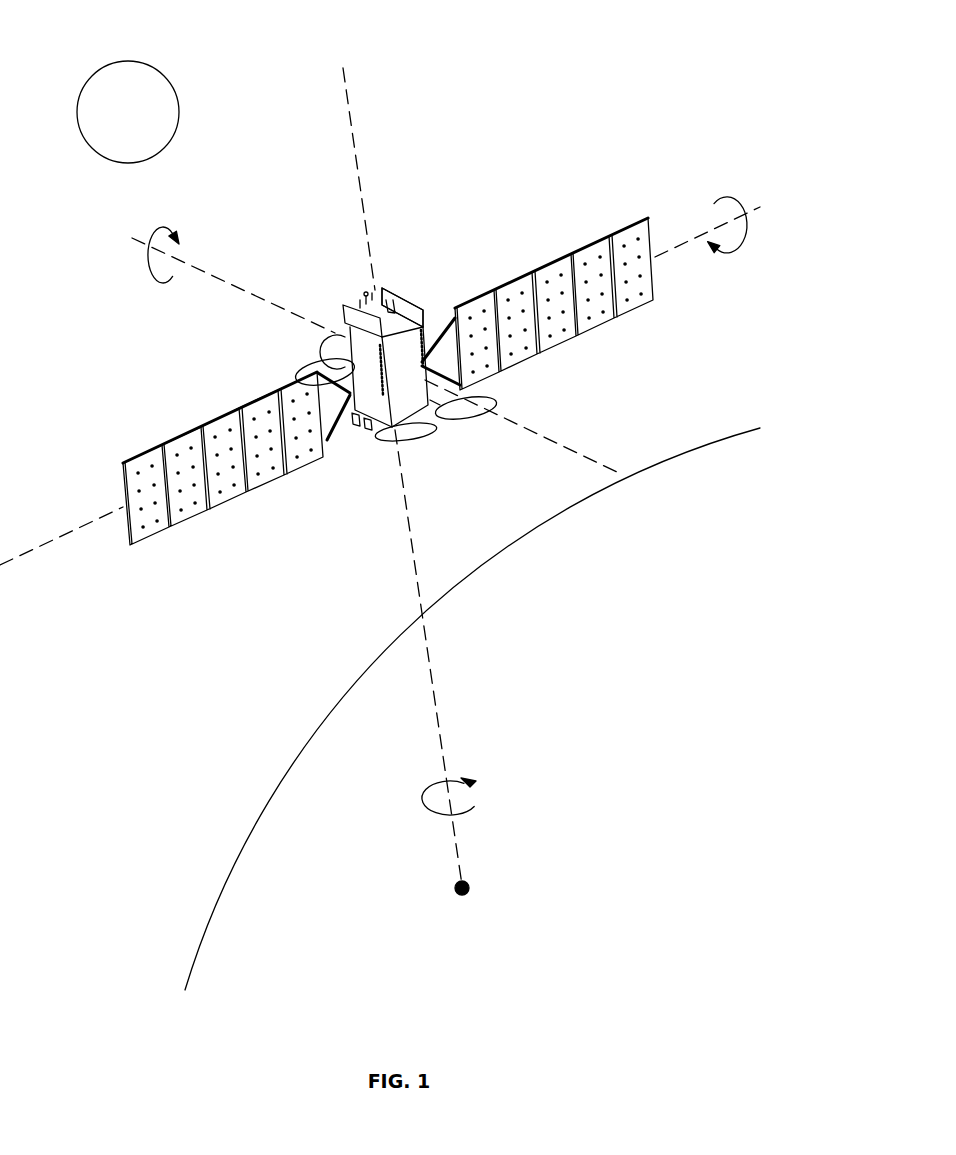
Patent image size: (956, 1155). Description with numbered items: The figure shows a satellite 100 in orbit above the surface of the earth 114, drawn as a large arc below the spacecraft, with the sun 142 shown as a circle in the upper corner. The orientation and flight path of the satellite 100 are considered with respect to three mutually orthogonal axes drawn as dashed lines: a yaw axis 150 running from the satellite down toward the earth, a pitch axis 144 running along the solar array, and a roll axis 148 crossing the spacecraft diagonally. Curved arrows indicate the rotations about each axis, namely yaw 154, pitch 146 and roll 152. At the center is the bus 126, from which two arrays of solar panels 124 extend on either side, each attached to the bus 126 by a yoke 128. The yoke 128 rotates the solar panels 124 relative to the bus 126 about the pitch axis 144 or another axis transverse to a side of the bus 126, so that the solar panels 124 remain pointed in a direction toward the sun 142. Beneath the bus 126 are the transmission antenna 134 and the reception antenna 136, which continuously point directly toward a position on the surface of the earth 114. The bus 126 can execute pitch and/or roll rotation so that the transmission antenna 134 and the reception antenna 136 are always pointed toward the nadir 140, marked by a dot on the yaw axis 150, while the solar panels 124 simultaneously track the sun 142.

The satellite 100 is at (391, 272).
The earth 114 is at (693, 448).
The solar panels 124 is at (602, 322).
The bus 126 is at (423, 315).
The yoke 128 is at (441, 333).
The transmission antenna 134 is at (425, 437).
The reception antenna 136 is at (478, 418).
The nadir 140 is at (470, 888).
The sun 142 is at (124, 62).
The pitch axis 144 is at (757, 209).
The pitch 146 is at (720, 200).
The roll axis 148 is at (239, 286).
The yaw axis 150 is at (437, 688).
The roll 152 is at (148, 258).
The yaw 154 is at (474, 806).